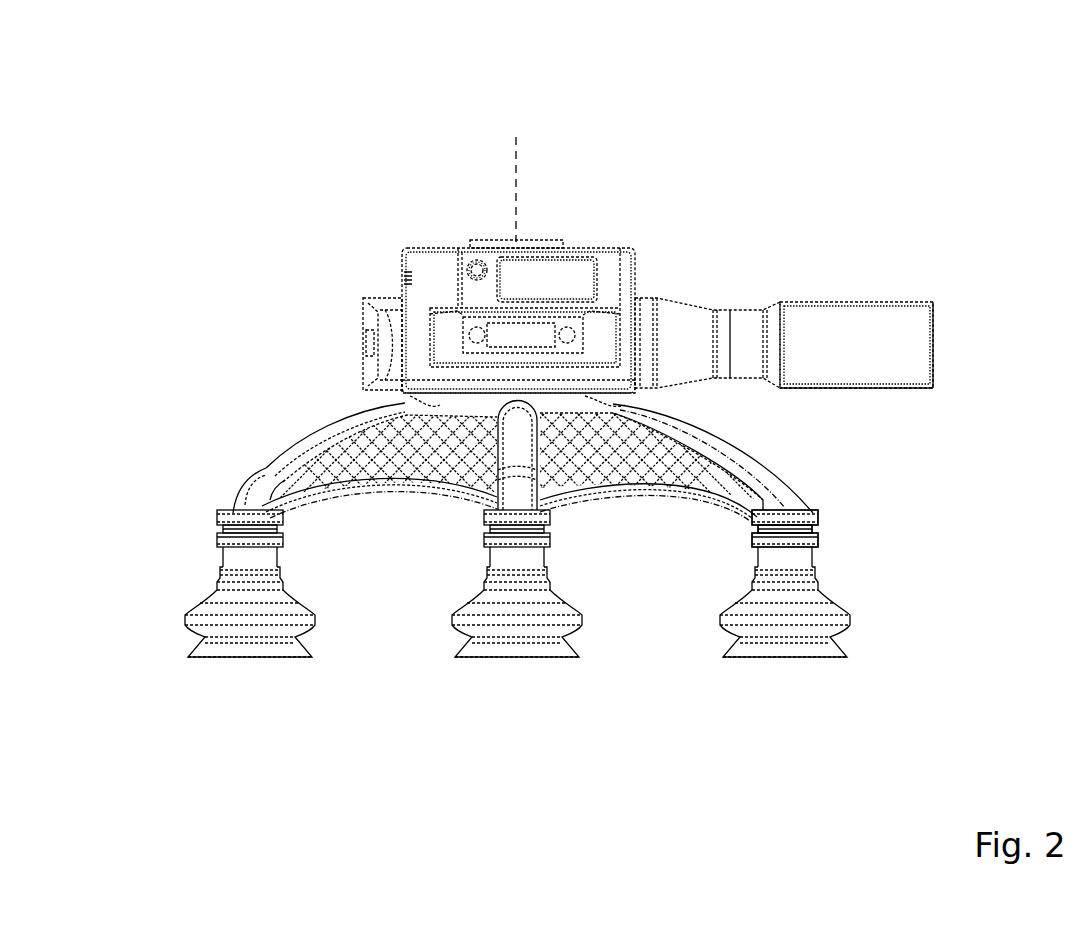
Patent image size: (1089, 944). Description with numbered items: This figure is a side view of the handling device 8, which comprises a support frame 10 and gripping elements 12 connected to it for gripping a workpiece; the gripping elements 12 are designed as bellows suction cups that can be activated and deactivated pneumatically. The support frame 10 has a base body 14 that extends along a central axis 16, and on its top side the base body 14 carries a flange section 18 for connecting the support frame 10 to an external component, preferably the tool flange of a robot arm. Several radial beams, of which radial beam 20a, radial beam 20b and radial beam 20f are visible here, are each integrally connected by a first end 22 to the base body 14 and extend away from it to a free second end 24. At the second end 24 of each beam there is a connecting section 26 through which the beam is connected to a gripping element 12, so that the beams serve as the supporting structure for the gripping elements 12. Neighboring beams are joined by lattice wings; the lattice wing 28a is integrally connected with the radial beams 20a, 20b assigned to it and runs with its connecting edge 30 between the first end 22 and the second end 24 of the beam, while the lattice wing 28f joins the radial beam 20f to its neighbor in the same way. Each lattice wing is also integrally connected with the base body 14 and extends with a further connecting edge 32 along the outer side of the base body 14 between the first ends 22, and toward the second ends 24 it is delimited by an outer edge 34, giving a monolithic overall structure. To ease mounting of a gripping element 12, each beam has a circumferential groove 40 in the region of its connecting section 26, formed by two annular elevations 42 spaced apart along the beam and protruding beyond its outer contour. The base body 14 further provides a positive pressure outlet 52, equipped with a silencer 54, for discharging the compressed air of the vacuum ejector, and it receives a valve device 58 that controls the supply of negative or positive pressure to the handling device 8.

The handling device 8 is at (517, 110).
The support frame 10 is at (303, 267).
The gripping element 12 is at (847, 615).
The base body 14 is at (652, 268).
The central axis 16 is at (518, 188).
The flange section 18 is at (460, 228).
The radial beam 20a is at (510, 495).
The radial beam 20b is at (725, 442).
The radial beam 20f is at (265, 466).
The first end 22 is at (405, 403).
The second end 24 is at (200, 530).
The connecting section 26 is at (893, 528).
The lattice wing 28a is at (608, 478).
The lattice wing 28f is at (310, 480).
The connecting edge 30 is at (548, 465).
The further connecting edge 32 is at (580, 410).
The outer edge 34 is at (660, 488).
The circumferential groove 40 is at (815, 528).
The annular elevation 42 is at (815, 512).
The positive pressure outlet 52 is at (640, 302).
The silencer 54 is at (855, 312).
The valve device 58 is at (540, 325).